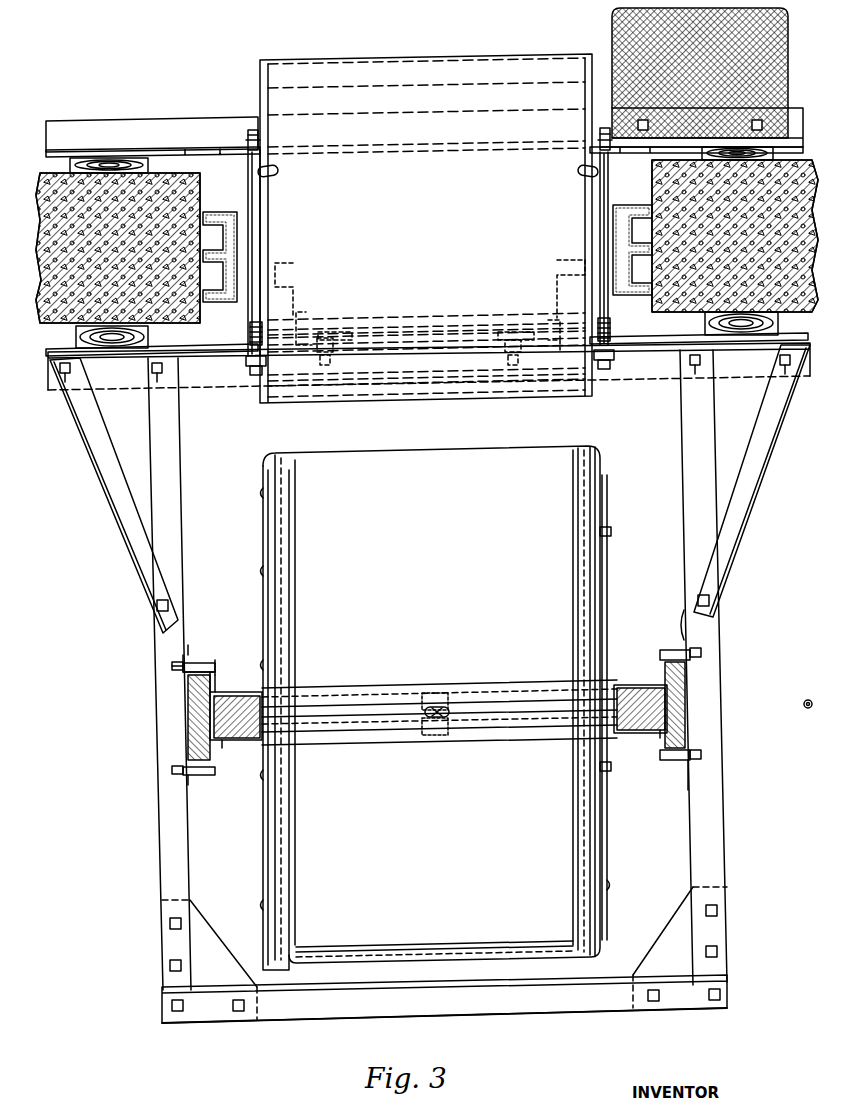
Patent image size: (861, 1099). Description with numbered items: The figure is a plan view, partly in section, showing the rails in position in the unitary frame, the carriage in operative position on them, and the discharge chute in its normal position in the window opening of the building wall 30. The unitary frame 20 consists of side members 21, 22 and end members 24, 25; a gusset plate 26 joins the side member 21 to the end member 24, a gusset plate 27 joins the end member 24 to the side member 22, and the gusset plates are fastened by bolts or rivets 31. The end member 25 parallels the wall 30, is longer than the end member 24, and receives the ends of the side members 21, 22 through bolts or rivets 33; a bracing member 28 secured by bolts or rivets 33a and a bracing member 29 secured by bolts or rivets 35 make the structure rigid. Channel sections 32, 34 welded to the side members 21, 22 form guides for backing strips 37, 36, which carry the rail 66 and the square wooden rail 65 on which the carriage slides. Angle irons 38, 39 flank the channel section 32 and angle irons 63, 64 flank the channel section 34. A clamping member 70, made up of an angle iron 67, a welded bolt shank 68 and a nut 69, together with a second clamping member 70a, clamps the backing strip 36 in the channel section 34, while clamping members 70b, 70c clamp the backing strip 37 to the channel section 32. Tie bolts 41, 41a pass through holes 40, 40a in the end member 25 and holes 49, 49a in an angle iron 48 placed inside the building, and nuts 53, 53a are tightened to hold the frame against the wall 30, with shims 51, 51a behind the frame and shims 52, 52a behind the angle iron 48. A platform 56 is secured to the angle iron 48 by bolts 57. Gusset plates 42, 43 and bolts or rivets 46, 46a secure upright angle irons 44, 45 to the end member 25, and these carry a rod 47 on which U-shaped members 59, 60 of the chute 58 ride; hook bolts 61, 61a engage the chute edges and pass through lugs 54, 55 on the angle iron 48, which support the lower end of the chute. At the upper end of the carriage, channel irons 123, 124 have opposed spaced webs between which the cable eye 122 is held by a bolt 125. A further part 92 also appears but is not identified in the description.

The unitary frame structure 20 is at (385, 1010).
The side member 21 is at (717, 672).
The side member 22 is at (165, 722).
The end member 24 is at (502, 1012).
The end member 25 is at (138, 375).
The gusset plate 26 is at (664, 945).
The gusset plate 27 is at (218, 954).
The bracing member 28 is at (755, 473).
The bracing member 29 is at (118, 505).
The wall of the building 30 is at (196, 180).
The bolts or rivets 31 is at (168, 965).
The channel section 32 is at (688, 692).
The bolts or rivets 33 is at (157, 382).
The bolts or rivets 33a is at (785, 374).
The channel section 34 is at (192, 735).
The bolts or rivets 35 is at (65, 382).
The backing strip 36 is at (203, 750).
The backing strip 37 is at (675, 728).
The angle iron 38 is at (683, 640).
The second angle iron 39 is at (688, 780).
The holes 40 is at (662, 345).
The holes 40a is at (254, 353).
The tie bolt 41 is at (606, 213).
The tie bolt 41a is at (250, 199).
The gusset plate 42 is at (514, 338).
The gusset plate 43 is at (338, 336).
The upright angle iron 44 is at (550, 318).
The upright angle iron 45 is at (300, 318).
The bolts or rivets 46 is at (538, 348).
The bolts or rivets 46a is at (360, 352).
The rod 47 is at (466, 324).
The angle iron 48 is at (156, 128).
The holes 49 is at (630, 150).
The holes 49a is at (220, 150).
The shim 51 is at (778, 322).
The shim 51a is at (78, 336).
The shim 52 is at (775, 155).
The shim 52a is at (150, 165).
The nut 53 is at (606, 130).
The nut 53a is at (250, 128).
The lug 54 is at (600, 178).
The lug 55 is at (262, 187).
The platform 56 is at (614, 30).
The bolts 57 is at (643, 120).
The chute 58 is at (400, 105).
The U-shaped member 59 is at (566, 260).
The U-shaped member 60 is at (286, 263).
The hook bolt 61 is at (580, 170).
The hook bolt 61a is at (278, 170).
The angle iron 63 is at (188, 655).
The angle iron 64 is at (188, 780).
The square wooden rail 65 is at (226, 742).
The rail 66 is at (660, 728).
The angle iron 67 is at (216, 681).
The bolt shank 68 is at (212, 664).
The nut 69 is at (176, 667).
The clamping member 70 is at (214, 672).
The second clamping member 70a is at (216, 765).
The clamping member 70b is at (662, 655).
The clamping member 70c is at (668, 757).
The bolt 92 is at (425, 712).
The eye 122 is at (450, 705).
The channel iron 123 is at (390, 690).
The channel iron 124 is at (352, 740).
The bolt 125 is at (446, 738).